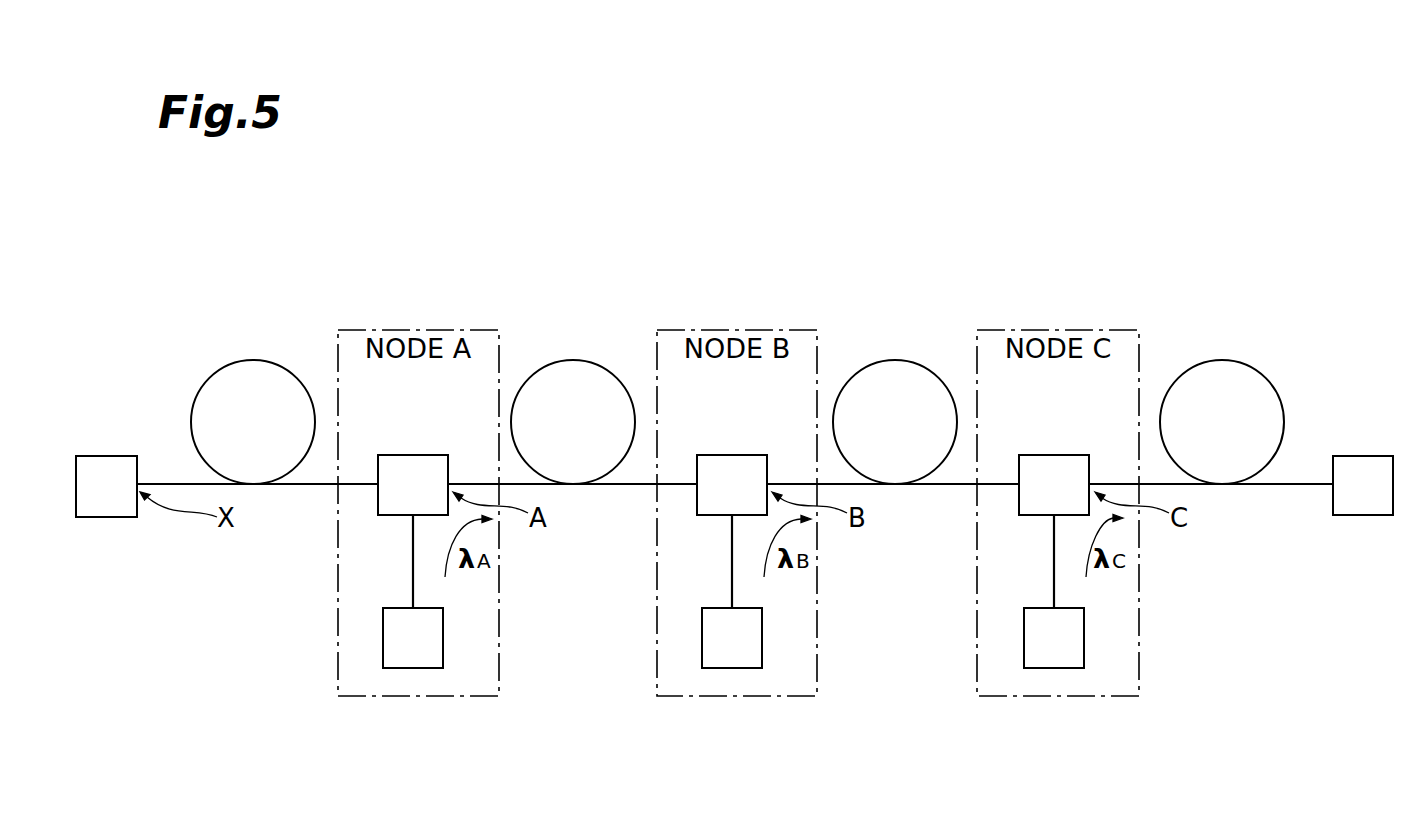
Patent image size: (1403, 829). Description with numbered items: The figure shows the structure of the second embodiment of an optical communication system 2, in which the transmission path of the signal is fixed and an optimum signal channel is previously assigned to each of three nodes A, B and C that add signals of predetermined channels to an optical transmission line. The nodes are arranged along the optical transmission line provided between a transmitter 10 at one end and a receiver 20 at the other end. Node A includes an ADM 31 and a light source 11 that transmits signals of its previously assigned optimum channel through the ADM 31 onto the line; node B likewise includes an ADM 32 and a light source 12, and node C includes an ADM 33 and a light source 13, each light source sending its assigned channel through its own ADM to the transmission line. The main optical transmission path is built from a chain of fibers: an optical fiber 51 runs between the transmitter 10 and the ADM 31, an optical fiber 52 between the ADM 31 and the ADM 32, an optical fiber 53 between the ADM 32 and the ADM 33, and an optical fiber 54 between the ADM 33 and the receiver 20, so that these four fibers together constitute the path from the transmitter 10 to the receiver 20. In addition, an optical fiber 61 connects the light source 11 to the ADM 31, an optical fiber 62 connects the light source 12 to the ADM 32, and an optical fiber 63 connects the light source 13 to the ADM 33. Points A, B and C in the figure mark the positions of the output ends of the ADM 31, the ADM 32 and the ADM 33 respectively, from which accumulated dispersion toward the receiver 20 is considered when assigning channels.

The optical communication system 2 is at (1091, 245).
The transmitter 10 is at (102, 456).
The light source 11 is at (443, 650).
The light source 12 is at (762, 650).
The light source 13 is at (1084, 650).
The receiver 20 is at (1363, 456).
The ADM 31 is at (410, 455).
The ADM 32 is at (729, 455).
The ADM 33 is at (1051, 455).
The optical fiber 51 is at (253, 360).
The optical fiber 52 is at (573, 360).
The optical fiber 53 is at (895, 360).
The optical fiber 54 is at (1222, 360).
The optical fiber 61 is at (413, 570).
The optical fiber 62 is at (732, 570).
The optical fiber 63 is at (1054, 570).